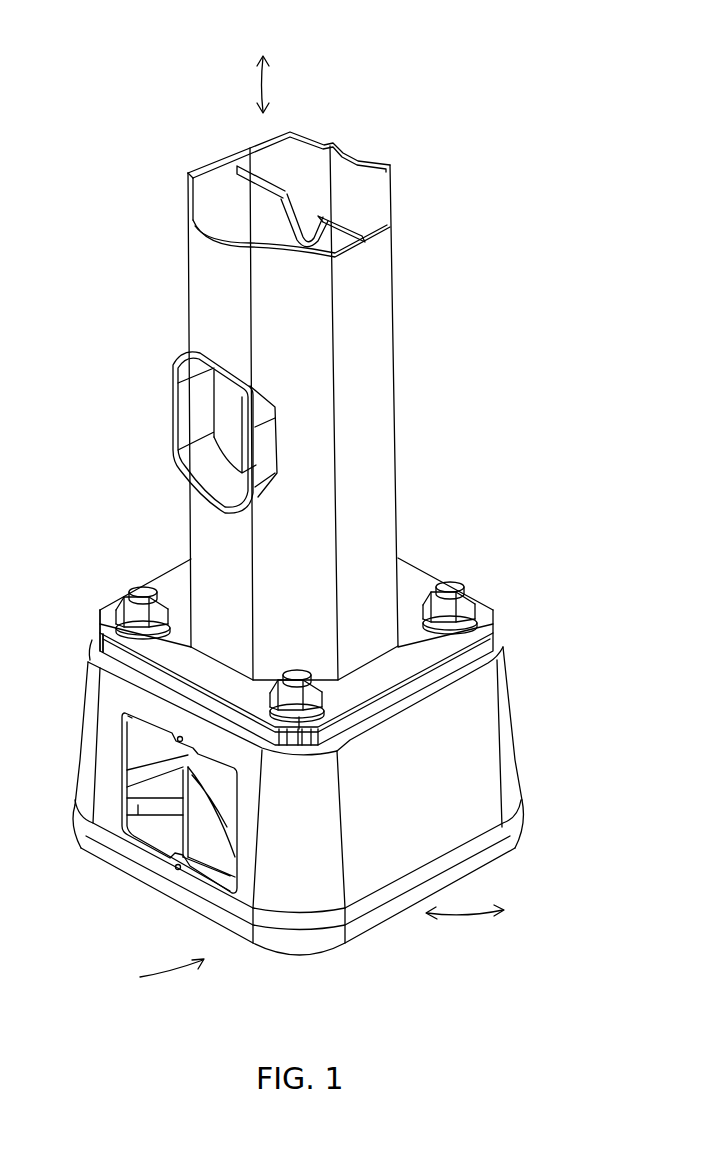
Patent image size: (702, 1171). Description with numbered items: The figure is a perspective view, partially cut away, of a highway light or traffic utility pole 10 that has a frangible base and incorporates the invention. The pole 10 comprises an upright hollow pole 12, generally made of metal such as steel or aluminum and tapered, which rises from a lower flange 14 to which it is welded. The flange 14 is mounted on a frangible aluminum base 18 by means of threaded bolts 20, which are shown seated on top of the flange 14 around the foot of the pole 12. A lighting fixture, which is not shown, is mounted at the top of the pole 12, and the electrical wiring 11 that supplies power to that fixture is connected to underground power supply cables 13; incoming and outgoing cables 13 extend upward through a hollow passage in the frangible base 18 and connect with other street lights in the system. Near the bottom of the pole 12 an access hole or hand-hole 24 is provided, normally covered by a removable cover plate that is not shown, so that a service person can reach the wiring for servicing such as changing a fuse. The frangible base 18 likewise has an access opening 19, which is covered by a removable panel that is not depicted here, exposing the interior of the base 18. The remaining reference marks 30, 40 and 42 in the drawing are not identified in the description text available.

The highway light or traffic utility pole 10 is at (103, 336).
The electrical wiring 11 is at (278, 90).
The upright hollow pole 12 is at (388, 438).
The underground power supply cables 13 is at (463, 928).
The lower flange 14 is at (418, 577).
The frangible aluminum base 18 is at (510, 715).
The access opening 19 is at (135, 753).
The threaded bolts 20 is at (468, 600).
The access hole or hand-hole 24 is at (195, 432).
The internal rib structure 30 is at (210, 845).
The hook retainer 40 is at (257, 204).
The plate corner 42 is at (97, 638).